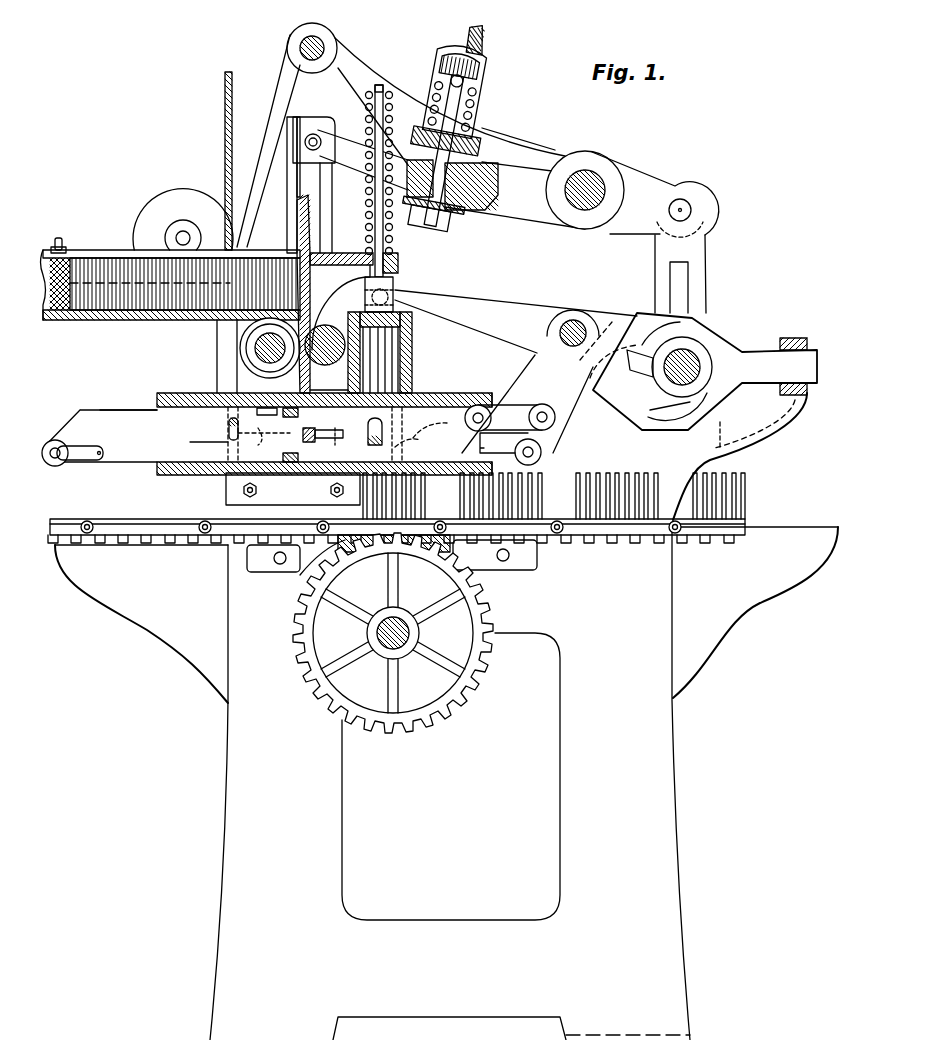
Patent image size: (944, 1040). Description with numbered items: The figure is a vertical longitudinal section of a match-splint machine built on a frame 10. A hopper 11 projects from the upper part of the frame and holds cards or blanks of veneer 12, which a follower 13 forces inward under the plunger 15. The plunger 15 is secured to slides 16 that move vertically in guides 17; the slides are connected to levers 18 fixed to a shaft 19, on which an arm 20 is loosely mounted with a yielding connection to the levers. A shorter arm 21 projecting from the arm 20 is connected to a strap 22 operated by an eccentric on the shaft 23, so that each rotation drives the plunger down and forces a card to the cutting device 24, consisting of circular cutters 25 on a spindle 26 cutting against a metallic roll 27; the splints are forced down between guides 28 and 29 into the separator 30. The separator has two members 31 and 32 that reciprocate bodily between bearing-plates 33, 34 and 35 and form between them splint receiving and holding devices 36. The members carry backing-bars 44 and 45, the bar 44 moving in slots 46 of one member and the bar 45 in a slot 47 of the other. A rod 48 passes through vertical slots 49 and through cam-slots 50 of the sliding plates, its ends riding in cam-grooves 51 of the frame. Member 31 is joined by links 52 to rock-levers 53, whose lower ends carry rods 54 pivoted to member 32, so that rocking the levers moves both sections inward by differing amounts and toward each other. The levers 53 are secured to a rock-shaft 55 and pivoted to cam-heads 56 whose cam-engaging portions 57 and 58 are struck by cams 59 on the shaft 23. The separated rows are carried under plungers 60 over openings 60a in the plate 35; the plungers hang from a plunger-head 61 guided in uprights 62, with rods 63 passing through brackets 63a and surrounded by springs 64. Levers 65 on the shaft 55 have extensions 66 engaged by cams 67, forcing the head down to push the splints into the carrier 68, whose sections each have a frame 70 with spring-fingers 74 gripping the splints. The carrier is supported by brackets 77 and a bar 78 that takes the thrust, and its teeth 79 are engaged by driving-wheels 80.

The frame 10 is at (448, 783).
The hopper 11 is at (118, 320).
The cards or blanks of veneer 12 is at (95, 260).
The follower 13 is at (54, 252).
The plunger 15 is at (298, 198).
The slides 16 is at (316, 125).
The guides 17 is at (288, 170).
The levers 18 is at (356, 152).
The shaft 19 is at (590, 180).
The arm 20 is at (514, 215).
The shorter arm 21 is at (660, 183).
The strap 22 is at (706, 272).
The shaft 23 is at (700, 352).
The cutting device 24 is at (218, 356).
The circular cutters 25 is at (252, 358).
The shaft or spindle 26 is at (250, 340).
The roll 27 is at (327, 358).
The guide 28 is at (343, 425).
The guide 29 is at (255, 365).
The separator 30 is at (99, 426).
The separator member or section 31 is at (510, 419).
The separator member or section 32 is at (115, 408).
The bearing-plate 33 is at (462, 393).
The bearing-plate 34 is at (165, 395).
The bearing-plate 35 is at (293, 489).
The splint receiving and holding devices 36 is at (335, 438).
The backing plate or bar 44 is at (290, 418).
The backing plate or bar 45 is at (313, 424).
The slots 46 is at (258, 413).
The slot 47 is at (372, 447).
The rod or bar 48 is at (228, 425).
The vertical slots 49 is at (196, 453).
The cam-slots 50 is at (264, 442).
The cam-grooves 51 is at (428, 420).
The links 52 is at (498, 410).
The rock-levers 53 is at (533, 404).
The rods 54 is at (90, 455).
The rock-shaft 55 is at (574, 318).
The cam-heads 56 is at (655, 425).
The cam-engaging portion 57 is at (660, 415).
The cam-engaging portion 58 is at (680, 330).
The cams 59 is at (705, 392).
The plungers 60 is at (386, 384).
The openings 60a is at (422, 446).
The plunger-head 61 is at (412, 327).
The uprights or guides 62 is at (400, 375).
The rods 63 is at (385, 247).
The brackets 63a is at (398, 275).
The springs 64 is at (364, 173).
The levers 65 is at (530, 312).
The extensions 66 is at (612, 335).
The cams 67 is at (630, 365).
The carrier 68 is at (397, 514).
The frame 70 is at (140, 540).
The spring-fingers 74 is at (341, 321).
The brackets 77 is at (160, 625).
The bar 78 is at (300, 562).
The teeth 79 is at (592, 538).
The driving-wheels 80 is at (318, 683).